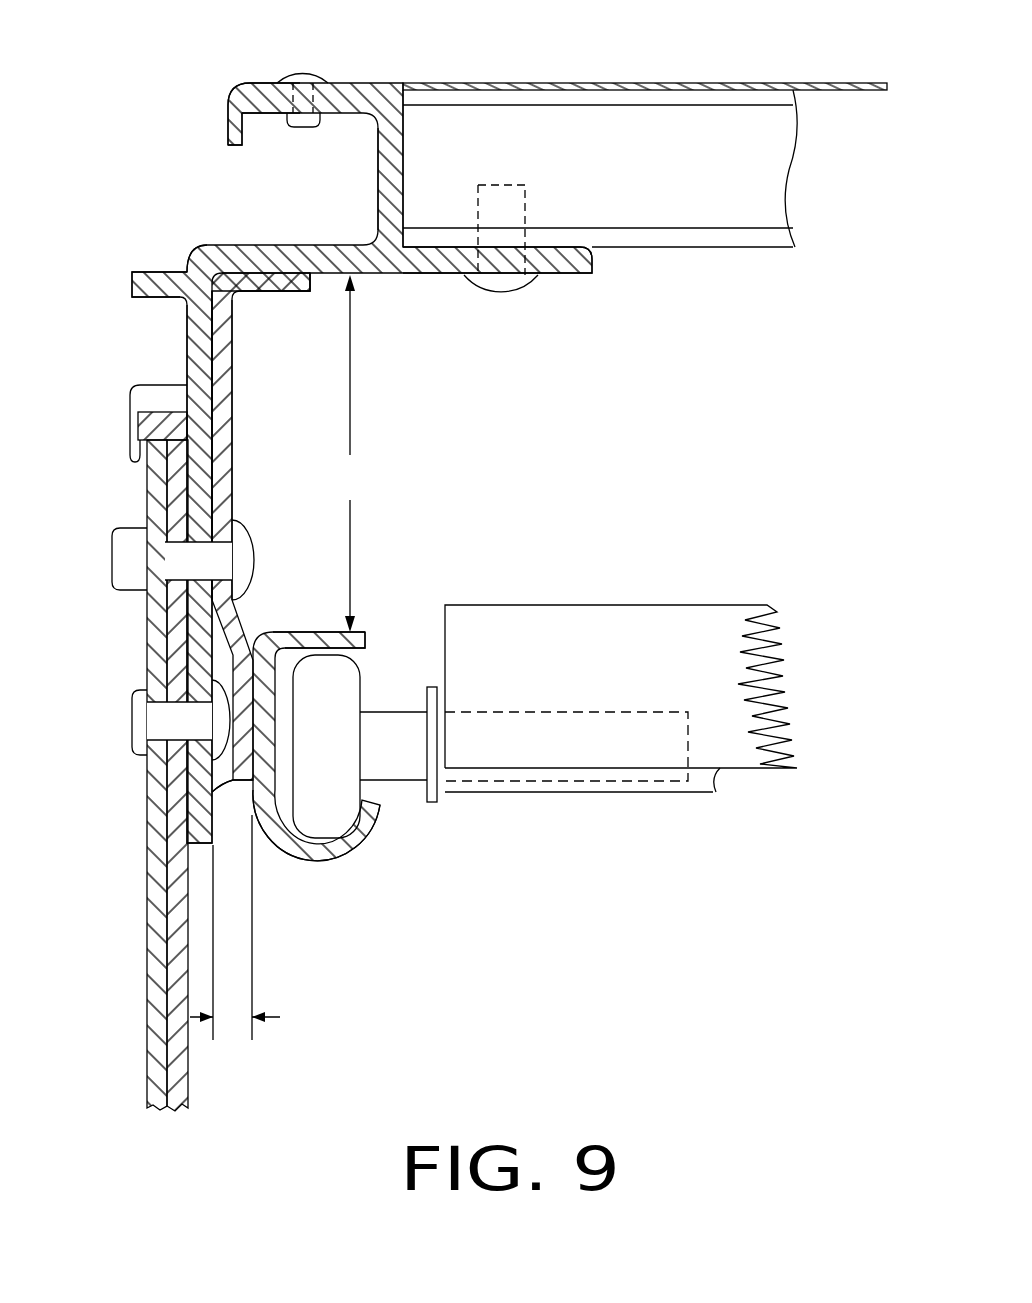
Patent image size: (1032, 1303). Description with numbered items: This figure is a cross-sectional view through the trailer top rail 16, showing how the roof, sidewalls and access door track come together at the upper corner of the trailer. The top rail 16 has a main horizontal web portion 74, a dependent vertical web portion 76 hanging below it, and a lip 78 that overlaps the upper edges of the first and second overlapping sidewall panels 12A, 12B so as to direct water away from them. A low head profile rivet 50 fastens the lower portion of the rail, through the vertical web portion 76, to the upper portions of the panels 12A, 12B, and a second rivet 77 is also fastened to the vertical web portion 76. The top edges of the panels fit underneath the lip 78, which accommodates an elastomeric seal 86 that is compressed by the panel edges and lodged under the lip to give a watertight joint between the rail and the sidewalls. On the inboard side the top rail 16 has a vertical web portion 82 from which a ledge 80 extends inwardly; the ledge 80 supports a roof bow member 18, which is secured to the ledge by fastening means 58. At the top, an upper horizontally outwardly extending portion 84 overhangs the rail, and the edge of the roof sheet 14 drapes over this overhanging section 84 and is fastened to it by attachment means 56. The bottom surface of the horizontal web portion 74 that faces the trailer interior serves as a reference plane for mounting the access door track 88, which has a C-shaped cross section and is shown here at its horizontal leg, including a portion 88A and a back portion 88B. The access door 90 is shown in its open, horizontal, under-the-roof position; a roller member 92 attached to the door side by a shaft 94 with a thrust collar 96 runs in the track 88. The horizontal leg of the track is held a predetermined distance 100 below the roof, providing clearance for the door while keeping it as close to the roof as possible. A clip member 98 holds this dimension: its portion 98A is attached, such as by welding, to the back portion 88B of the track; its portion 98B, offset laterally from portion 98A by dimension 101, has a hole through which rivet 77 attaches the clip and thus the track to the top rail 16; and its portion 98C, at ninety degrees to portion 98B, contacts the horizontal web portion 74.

The first sidewall panel 12A is at (147, 878).
The second sidewall panel 12B is at (183, 1107).
The roof sheet 14 is at (612, 83).
The top rail 16 is at (150, 210).
The roof bow member 18 is at (790, 170).
The low head profile rivet 50 is at (102, 702).
The attachment means 56 is at (320, 66).
The fastening means 58 is at (498, 288).
The main horizontal web portion 74 is at (228, 245).
The dependent vertical web portion 76 is at (202, 323).
The rivet 77 is at (255, 560).
The lip 78 is at (147, 397).
The ledge 80 is at (570, 277).
The vertical web portion 82 is at (378, 150).
The upper horizontally outwardly extending portion 84 is at (262, 115).
The elastomeric seal 86 is at (140, 440).
The access door track 88 is at (317, 858).
The track portion 88A is at (292, 630).
The back portion of track 88B is at (262, 843).
The access door 90 is at (618, 605).
The roller member 92 is at (350, 690).
The shaft 94 is at (648, 783).
The thrust collar 96 is at (437, 803).
The clip member 98 is at (323, 376).
The clip portion 98A is at (210, 787).
The clip portion 98B is at (226, 437).
The clip portion 98C is at (290, 282).
The predetermined distance 100 is at (355, 453).
The lateral offset dimension 101 is at (231, 1030).